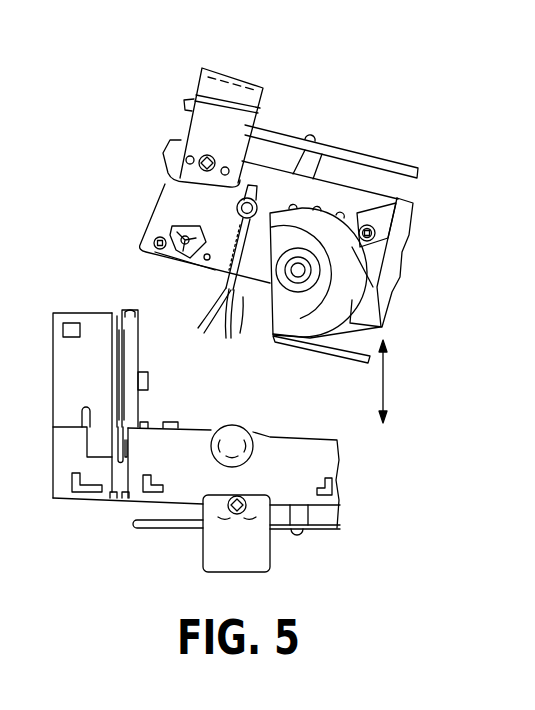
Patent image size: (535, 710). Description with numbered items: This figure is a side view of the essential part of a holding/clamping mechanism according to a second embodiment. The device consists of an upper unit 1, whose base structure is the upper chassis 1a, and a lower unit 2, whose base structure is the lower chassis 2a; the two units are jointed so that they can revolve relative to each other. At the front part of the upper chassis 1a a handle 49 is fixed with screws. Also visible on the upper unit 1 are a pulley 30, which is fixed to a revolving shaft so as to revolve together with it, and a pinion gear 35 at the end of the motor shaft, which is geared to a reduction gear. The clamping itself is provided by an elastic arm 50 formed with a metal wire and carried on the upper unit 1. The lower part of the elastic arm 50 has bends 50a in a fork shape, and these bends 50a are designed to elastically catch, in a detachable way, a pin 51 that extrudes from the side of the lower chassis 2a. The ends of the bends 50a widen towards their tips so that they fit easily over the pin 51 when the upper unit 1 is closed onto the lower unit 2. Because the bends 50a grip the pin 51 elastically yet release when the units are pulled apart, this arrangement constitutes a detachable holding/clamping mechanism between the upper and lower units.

The upper unit 1 is at (413, 252).
The upper chassis 1a is at (277, 177).
The lower unit 2 is at (343, 473).
The lower chassis 2a is at (148, 498).
The pulley 30 is at (320, 247).
The pinion gear 35 is at (163, 162).
The handle 49 is at (228, 85).
The elastic arm 50 is at (232, 228).
The bends 50a is at (207, 283).
The pin 51 is at (232, 442).